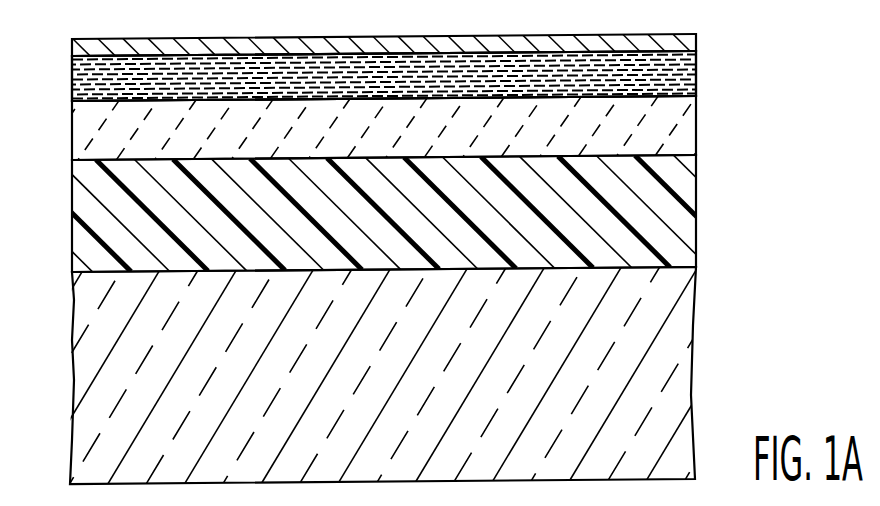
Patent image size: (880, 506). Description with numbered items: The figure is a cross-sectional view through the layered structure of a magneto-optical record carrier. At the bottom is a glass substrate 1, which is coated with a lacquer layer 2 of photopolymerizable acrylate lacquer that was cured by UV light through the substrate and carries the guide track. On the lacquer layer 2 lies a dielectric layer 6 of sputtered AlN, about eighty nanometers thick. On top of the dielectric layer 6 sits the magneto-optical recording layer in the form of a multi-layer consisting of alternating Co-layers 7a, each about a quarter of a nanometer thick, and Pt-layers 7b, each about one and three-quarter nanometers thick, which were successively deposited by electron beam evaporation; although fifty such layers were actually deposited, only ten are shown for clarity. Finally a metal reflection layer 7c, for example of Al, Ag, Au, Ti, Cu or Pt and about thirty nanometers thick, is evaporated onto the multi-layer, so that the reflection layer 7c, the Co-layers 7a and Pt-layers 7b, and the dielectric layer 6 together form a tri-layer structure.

The glass substrate 1 is at (677, 347).
The lacquer layer 2 is at (677, 205).
The dielectric layer 6 is at (682, 131).
The Co-layers 7a is at (696, 56).
The Pt-layers 7b is at (72, 60).
The reflection layer 7c is at (72, 40).